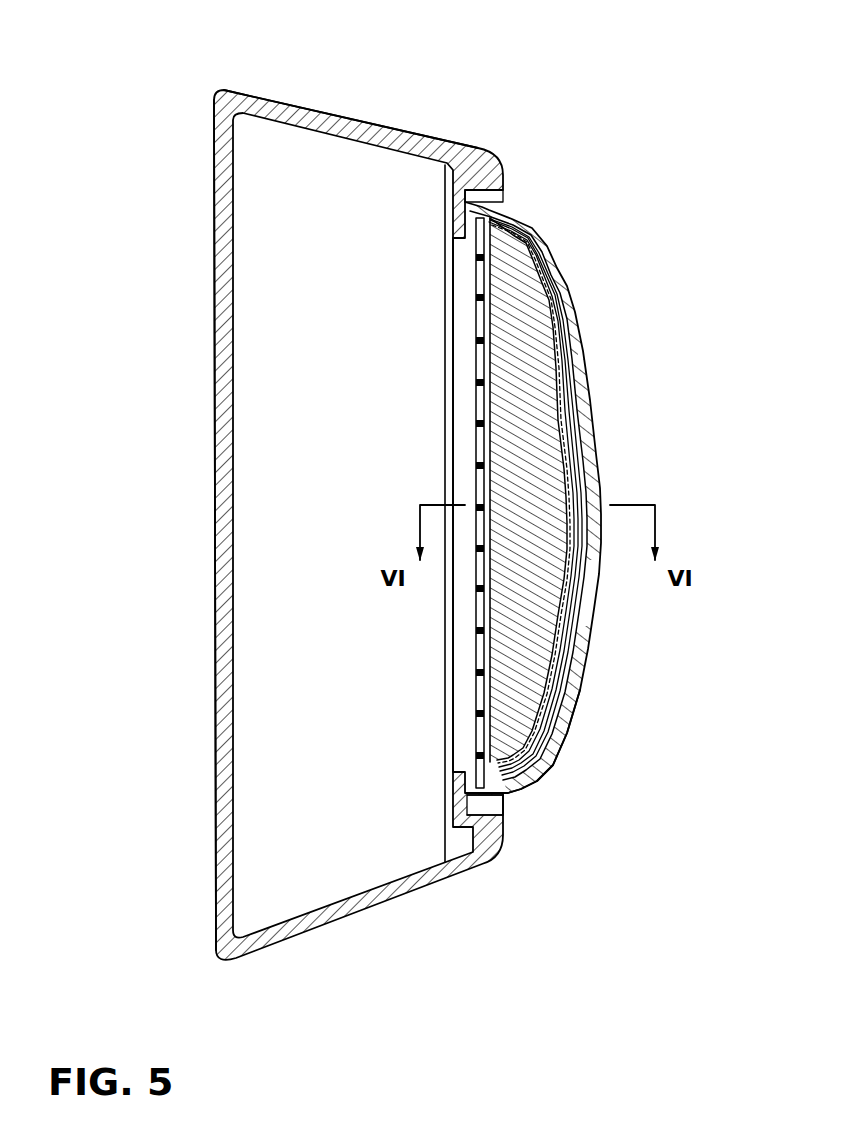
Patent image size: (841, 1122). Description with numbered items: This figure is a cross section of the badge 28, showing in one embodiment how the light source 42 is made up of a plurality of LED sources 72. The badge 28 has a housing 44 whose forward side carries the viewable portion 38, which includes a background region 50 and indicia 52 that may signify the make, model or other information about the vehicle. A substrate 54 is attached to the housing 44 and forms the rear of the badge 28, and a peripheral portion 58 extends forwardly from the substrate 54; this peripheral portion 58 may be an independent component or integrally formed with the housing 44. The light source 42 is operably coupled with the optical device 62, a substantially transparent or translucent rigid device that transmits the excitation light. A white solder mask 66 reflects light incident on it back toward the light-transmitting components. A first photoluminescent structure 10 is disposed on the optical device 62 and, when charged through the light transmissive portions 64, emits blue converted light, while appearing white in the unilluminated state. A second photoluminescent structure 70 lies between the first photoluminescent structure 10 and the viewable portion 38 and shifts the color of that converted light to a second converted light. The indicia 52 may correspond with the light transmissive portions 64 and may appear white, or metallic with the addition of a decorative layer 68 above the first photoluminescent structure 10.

The first photoluminescent structure 10 is at (566, 493).
The badge 28 is at (198, 102).
The viewable portion 38 is at (591, 511).
The light source 42 is at (566, 677).
The housing 44 is at (548, 240).
The background region 50 is at (557, 758).
The indicia 52 is at (591, 497).
The substrate 54 is at (232, 87).
The peripheral portion 58 is at (336, 115).
The optical device 62 is at (527, 330).
The light transmissive portions 64 is at (600, 598).
The white solder mask 66 is at (505, 798).
The decorative layer 68 is at (497, 650).
The second photoluminescent structure 70 is at (576, 633).
The LED sources 72 is at (482, 423).